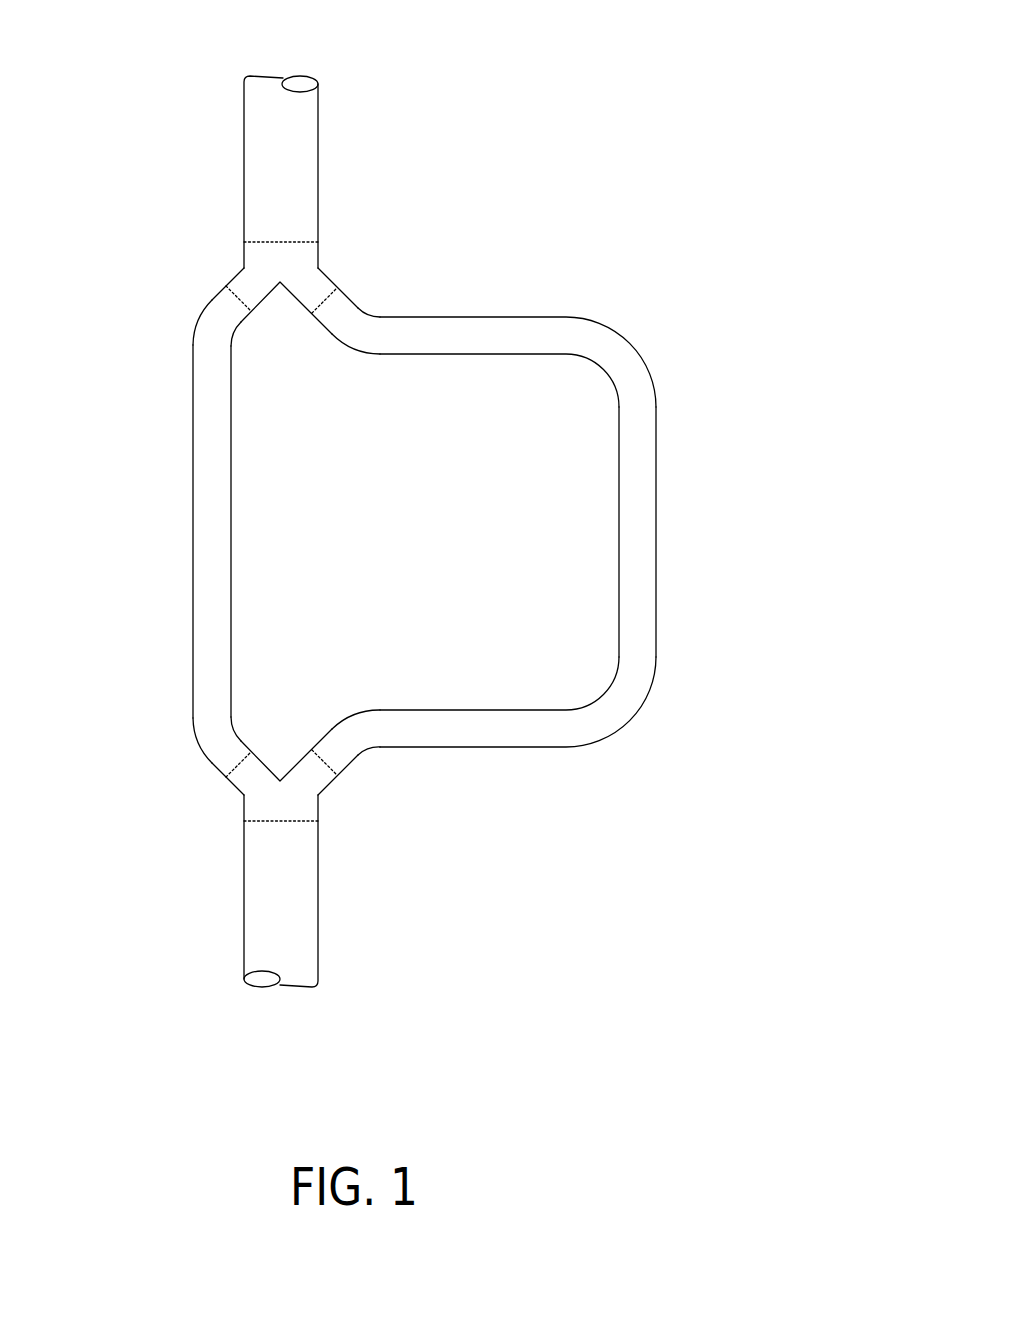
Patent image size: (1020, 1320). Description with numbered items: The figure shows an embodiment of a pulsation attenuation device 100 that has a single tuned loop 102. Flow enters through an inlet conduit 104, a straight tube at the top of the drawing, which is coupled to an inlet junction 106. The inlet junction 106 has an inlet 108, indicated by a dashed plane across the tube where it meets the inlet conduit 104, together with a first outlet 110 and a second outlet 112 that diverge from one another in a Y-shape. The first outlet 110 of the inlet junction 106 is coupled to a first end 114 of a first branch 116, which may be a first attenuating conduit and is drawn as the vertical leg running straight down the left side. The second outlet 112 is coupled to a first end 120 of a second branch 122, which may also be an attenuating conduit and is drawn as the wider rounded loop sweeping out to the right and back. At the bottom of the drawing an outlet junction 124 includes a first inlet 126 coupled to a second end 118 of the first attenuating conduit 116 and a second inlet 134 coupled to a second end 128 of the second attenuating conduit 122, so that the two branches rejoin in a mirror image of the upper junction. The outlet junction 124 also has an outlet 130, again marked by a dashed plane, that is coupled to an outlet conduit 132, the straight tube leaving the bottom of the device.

The pulsation attenuation device 100 is at (697, 101).
The tuned loop 102 is at (554, 507).
The inlet conduit 104 is at (299, 157).
The inlet junction 106 is at (282, 270).
The inlet 108 is at (282, 252).
The first outlet 110 is at (254, 295).
The second outlet 112 is at (319, 288).
The first end 114 is at (228, 305).
The first branch 116 is at (212, 502).
The second end 118 is at (228, 766).
The first end 120 is at (328, 313).
The second branch 122 is at (642, 504).
The outlet junction 124 is at (282, 795).
The first inlet 126 is at (248, 767).
The second end 128 is at (328, 750).
The outlet 130 is at (282, 813).
The outlet conduit 132 is at (258, 911).
The second inlet 134 is at (319, 771).